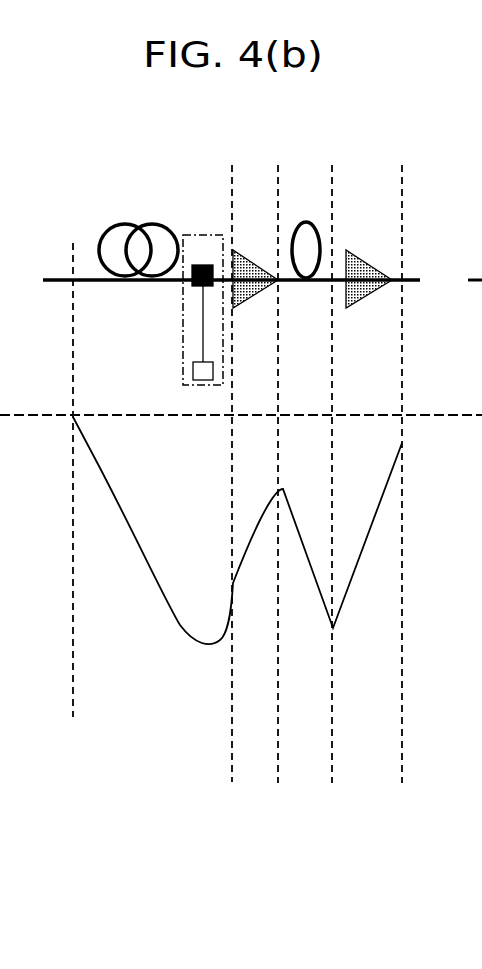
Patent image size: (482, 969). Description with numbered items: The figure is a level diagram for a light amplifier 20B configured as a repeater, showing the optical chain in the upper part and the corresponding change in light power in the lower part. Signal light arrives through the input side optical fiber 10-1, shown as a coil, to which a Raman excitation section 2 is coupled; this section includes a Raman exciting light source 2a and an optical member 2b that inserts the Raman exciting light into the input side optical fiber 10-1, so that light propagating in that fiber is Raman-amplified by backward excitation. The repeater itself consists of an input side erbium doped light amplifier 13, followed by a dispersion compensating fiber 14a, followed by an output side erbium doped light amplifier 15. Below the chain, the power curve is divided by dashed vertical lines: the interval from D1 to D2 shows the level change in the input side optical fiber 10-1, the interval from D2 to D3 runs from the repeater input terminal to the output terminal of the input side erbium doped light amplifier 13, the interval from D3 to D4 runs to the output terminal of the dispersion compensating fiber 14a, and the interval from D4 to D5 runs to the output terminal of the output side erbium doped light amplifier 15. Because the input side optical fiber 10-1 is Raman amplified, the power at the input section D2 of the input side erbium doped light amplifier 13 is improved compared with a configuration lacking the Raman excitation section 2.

The input side optical fiber 10-1 is at (128, 224).
The Raman excitation section 2 is at (167, 288).
The optical member 2b is at (203, 265).
The Raman exciting light source 2a is at (203, 381).
The input side erbium doped light amplifier 13 is at (258, 300).
The dispersion compensating fiber 14a is at (307, 222).
The output side erbium doped light amplifier 15 is at (370, 250).
The light amplifier 20B is at (387, 161).
The start point of input side optical fiber interval D1 is at (73, 663).
The input terminal D2 is at (232, 753).
The output terminal of input side erbium doped light amplifier D3 is at (277, 763).
The output terminal of dispersion compensating fiber D4 is at (335, 755).
The output terminal of output side erbium doped light amplifier D5 is at (400, 755).